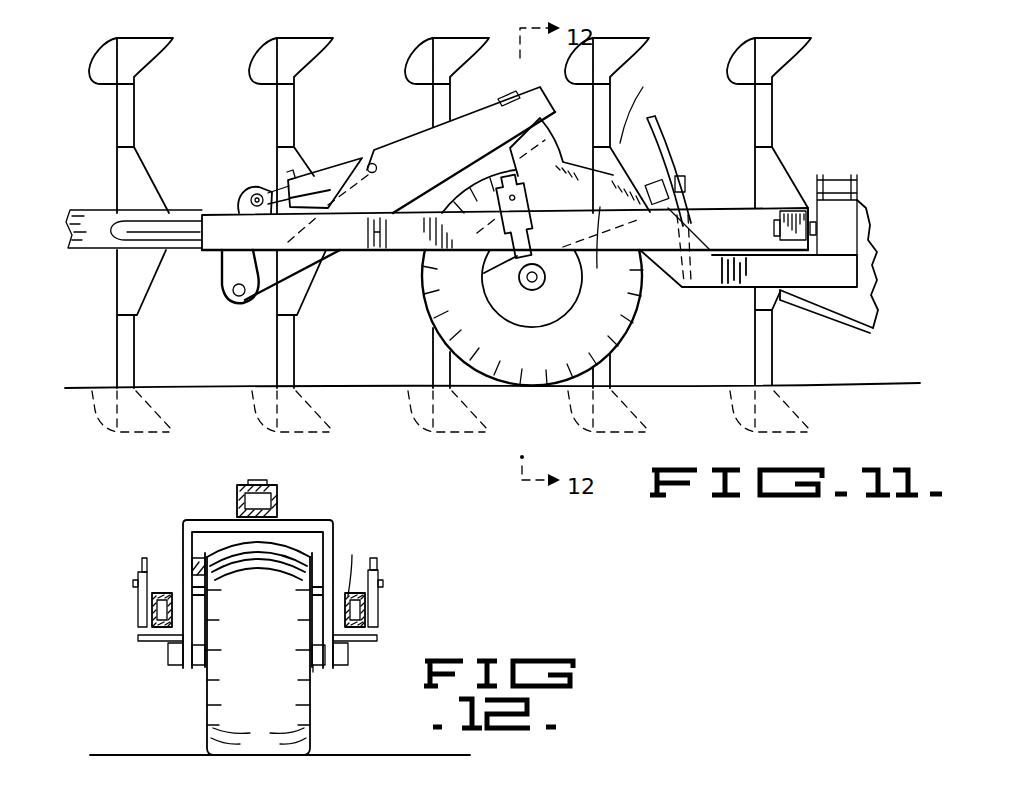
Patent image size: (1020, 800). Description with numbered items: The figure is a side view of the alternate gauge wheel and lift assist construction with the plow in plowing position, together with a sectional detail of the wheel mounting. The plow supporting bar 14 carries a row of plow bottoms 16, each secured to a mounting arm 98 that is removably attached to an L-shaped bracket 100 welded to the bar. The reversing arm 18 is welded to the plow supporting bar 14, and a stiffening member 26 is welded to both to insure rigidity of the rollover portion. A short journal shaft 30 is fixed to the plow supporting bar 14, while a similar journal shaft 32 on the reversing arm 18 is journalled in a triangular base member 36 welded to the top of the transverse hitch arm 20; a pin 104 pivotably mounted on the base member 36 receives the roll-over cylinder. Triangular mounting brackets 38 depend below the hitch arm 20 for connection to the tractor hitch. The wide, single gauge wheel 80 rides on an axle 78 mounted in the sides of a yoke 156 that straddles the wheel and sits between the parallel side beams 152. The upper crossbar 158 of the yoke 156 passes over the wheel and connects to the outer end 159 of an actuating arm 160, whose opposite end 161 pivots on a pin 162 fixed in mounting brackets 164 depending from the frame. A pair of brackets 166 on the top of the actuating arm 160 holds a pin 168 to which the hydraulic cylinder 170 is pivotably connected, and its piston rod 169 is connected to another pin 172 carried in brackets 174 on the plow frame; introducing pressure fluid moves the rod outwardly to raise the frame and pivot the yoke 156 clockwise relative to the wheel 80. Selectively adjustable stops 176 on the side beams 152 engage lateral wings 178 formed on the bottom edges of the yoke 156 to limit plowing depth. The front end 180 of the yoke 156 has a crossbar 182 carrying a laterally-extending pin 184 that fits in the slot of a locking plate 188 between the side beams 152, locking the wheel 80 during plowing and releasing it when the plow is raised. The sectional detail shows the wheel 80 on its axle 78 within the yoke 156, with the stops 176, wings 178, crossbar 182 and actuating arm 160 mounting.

In FIG. 11, the plow supporting bar 14 is at (85, 216).
In FIG. 11, the plow bottom 16 is at (790, 43).
In FIG. 11, the reversing arm 18 is at (777, 239).
In FIG. 11, the hitch arm 20 is at (853, 272).
In FIG. 11, the stiffening member 26 is at (740, 210).
In FIG. 11, the journal shaft 30 is at (115, 255).
In FIG. 11, the journal shaft 32 is at (811, 229).
In FIG. 11, the base member 36 is at (853, 240).
In FIG. 11, the mounting bracket 38 is at (860, 320).
In FIG. 12, the axle 78 is at (313, 672).
In FIG. 11, the gauge wheel 80 is at (427, 311).
In FIG. 12, the gauge wheel 80 is at (206, 720).
In FIG. 11, the mounting arm 98 is at (792, 234).
In FIG. 11, the L-shaped bracket 100 is at (780, 157).
In FIG. 11, the pin 104 is at (840, 177).
In FIG. 12, the side beam 152 is at (355, 553).
In FIG. 11, the yoke 156 is at (600, 250).
In FIG. 12, the yoke 156 is at (333, 527).
In FIG. 11, the upper crossbar 158 is at (553, 144).
In FIG. 11, the outer end 159 is at (550, 68).
In FIG. 11, the actuating arm 160 is at (461, 150).
In FIG. 12, the actuating arm 160 is at (278, 490).
In FIG. 11, the opposite end 161 is at (263, 300).
In FIG. 11, the pin 162 is at (233, 293).
In FIG. 11, the mounting bracket 164 is at (231, 270).
In FIG. 11, the bracket 166 is at (420, 118).
In FIG. 11, the pin 168 is at (372, 162).
In FIG. 11, the piston rod 169 is at (283, 178).
In FIG. 11, the hydraulic cylinder 170 is at (337, 163).
In FIG. 11, the pin 172 is at (257, 191).
In FIG. 11, the bracket 174 is at (242, 200).
In FIG. 11, the adjustable stop 176 is at (528, 198).
In FIG. 12, the adjustable stop 176 is at (140, 593).
In FIG. 11, the lateral wing 178 is at (486, 275).
In FIG. 12, the lateral wing 178 is at (137, 639).
In FIG. 11, the front end 180 is at (654, 110).
In FIG. 12, the crossbar 182 is at (197, 560).
In FIG. 11, the pin 184 is at (680, 180).
In FIG. 11, the locking plate 188 is at (664, 133).